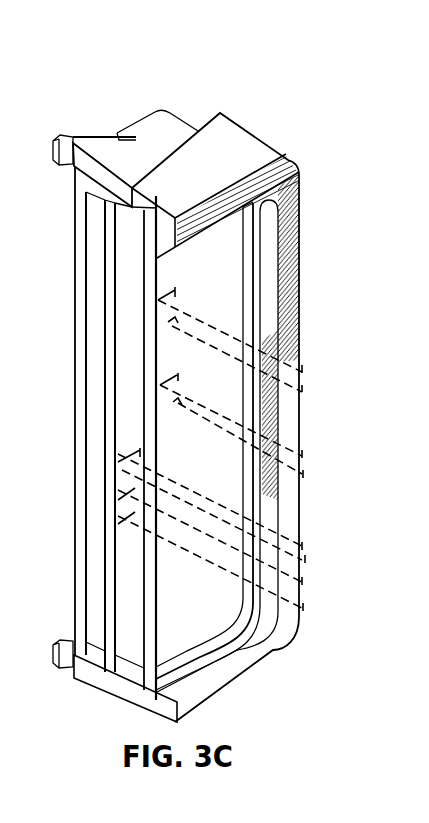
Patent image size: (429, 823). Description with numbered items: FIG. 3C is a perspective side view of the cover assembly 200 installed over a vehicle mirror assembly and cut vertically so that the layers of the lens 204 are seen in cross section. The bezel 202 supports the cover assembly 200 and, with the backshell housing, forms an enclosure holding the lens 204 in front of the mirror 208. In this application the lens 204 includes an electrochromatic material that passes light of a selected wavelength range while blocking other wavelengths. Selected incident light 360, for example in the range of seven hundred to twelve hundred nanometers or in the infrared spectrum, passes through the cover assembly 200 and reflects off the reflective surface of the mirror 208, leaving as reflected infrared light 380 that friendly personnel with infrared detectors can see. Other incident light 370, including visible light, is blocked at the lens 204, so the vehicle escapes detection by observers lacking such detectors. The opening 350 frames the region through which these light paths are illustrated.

The cover assembly 200 is at (326, 88).
The bezel 202 is at (278, 153).
The lens 204 is at (140, 590).
The mirror 208 is at (105, 240).
The window opening 350 is at (223, 252).
The selected incident light 360 is at (305, 547).
The other incident light 370 is at (311, 380).
The reflected infrared light 380 is at (307, 600).